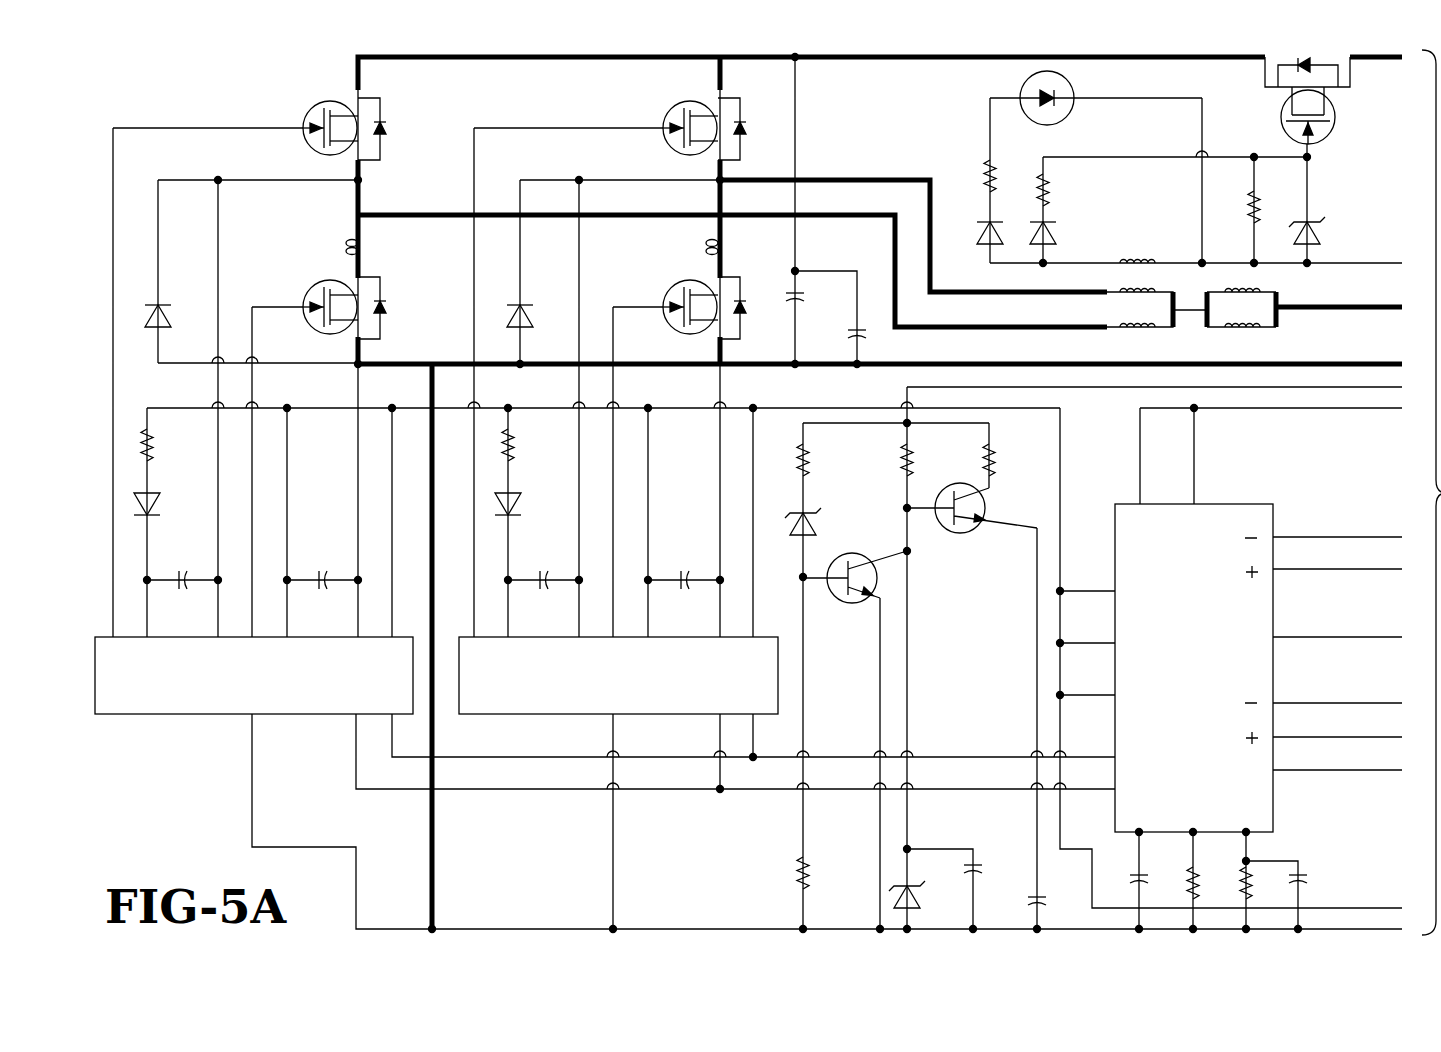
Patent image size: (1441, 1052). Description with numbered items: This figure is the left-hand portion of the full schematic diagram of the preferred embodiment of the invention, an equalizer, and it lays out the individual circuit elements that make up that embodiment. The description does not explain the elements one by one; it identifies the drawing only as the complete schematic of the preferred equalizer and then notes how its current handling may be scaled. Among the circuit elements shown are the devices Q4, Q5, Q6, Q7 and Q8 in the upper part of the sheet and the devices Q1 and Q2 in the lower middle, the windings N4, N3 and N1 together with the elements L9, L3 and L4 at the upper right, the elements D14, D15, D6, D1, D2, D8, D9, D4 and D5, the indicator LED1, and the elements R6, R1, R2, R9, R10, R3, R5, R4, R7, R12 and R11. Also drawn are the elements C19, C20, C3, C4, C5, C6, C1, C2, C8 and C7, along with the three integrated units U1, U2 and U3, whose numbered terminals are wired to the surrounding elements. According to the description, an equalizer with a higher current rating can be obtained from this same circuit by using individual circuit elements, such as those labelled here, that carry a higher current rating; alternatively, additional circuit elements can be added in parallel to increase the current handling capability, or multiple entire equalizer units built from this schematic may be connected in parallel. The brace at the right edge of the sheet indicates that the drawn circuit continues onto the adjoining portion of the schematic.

The power MOSFET switch Q4 is at (334, 123).
The power MOSFET switch Q5 is at (334, 302).
The power MOSFET switch Q6 is at (694, 123).
The power MOSFET switch Q7 is at (694, 302).
The MOSFET Q8 is at (1292, 101).
The transistor Q1 is at (855, 594).
The transistor Q2 is at (972, 525).
The transformer winding N4 is at (330, 247).
The transformer winding N3 is at (909, 297).
The transformer winding N1 is at (1121, 278).
The diode D14 is at (179, 303).
The diode D15 is at (542, 303).
The capacitor C19 is at (821, 297).
The capacitor C20 is at (835, 334).
The light emitting diode LED1 is at (1081, 98).
The resistor R6 is at (972, 176).
The resistor R1 is at (1063, 190).
The diode D6 is at (974, 235).
The diode D1 is at (1065, 235).
The inductor L9 is at (1137, 241).
The resistor R2 is at (1236, 207).
The zener diode D2 is at (1325, 231).
The inductor L3 is at (1266, 282).
The inductor L4 is at (1259, 342).
The resistor R9 is at (169, 445).
The diode D8 is at (167, 507).
The capacitor C3 is at (182, 565).
The capacitor C4 is at (322, 565).
The resistor R10 is at (536, 445).
The diode D9 is at (529, 507).
The capacitor C5 is at (545, 565).
The capacitor C6 is at (683, 565).
The gate driver IC U1 is at (259, 679).
The gate driver IC U2 is at (622, 679).
The PWM controller IC U3 is at (1198, 668).
The resistor R3 is at (825, 460).
The resistor R5 is at (930, 460).
The resistor R4 is at (1012, 460).
The zener diode D4 is at (821, 522).
The resistor R7 is at (825, 873).
The zener diode D5 is at (923, 896).
The capacitor C1 is at (991, 869).
The capacitor C2 is at (1053, 904).
The capacitor C8 is at (1123, 879).
The resistor R12 is at (1173, 889).
The resistor R11 is at (1271, 889).
The capacitor C7 is at (1316, 879).